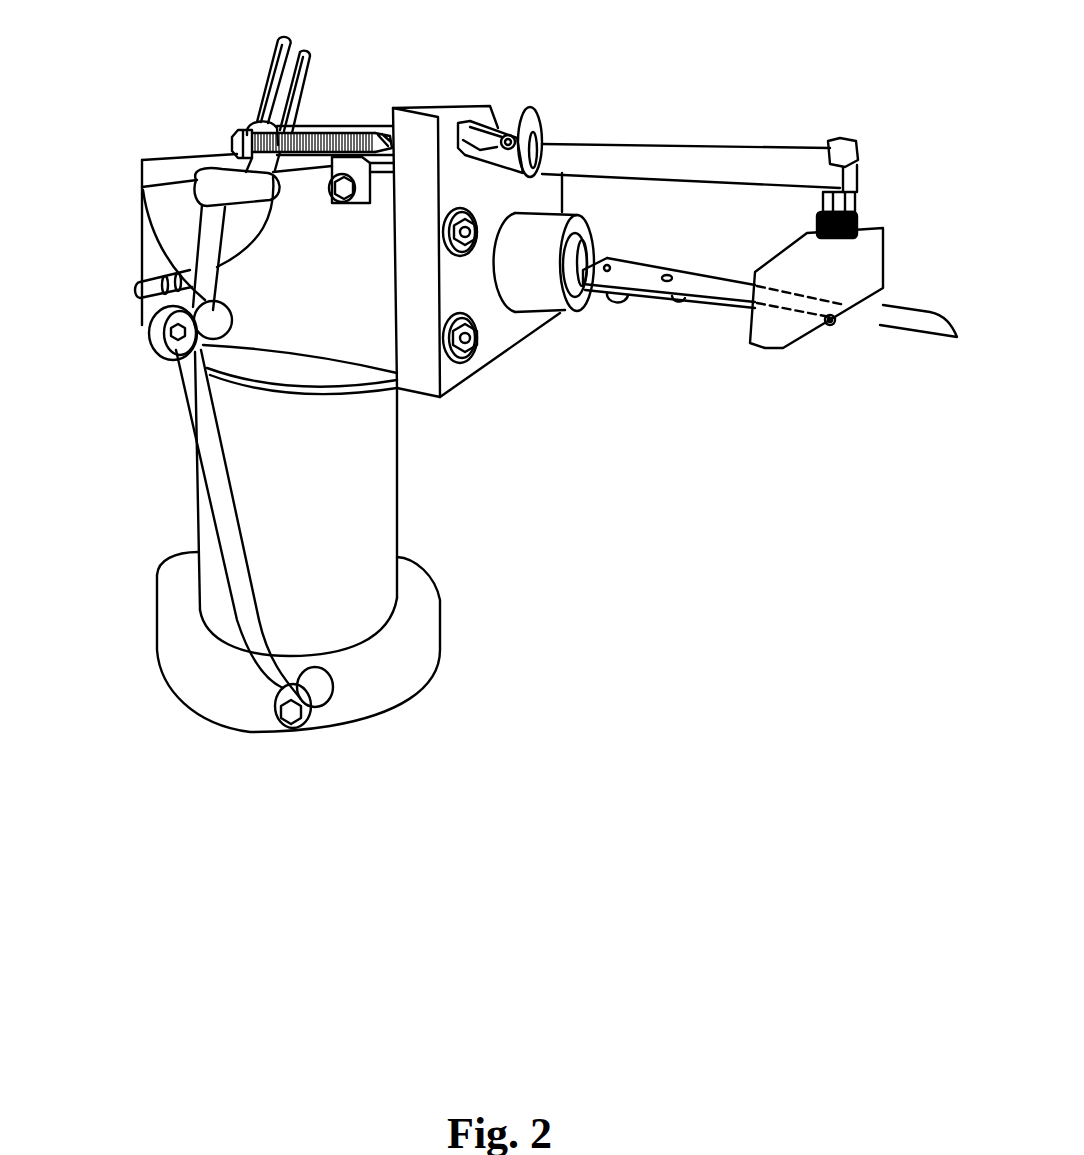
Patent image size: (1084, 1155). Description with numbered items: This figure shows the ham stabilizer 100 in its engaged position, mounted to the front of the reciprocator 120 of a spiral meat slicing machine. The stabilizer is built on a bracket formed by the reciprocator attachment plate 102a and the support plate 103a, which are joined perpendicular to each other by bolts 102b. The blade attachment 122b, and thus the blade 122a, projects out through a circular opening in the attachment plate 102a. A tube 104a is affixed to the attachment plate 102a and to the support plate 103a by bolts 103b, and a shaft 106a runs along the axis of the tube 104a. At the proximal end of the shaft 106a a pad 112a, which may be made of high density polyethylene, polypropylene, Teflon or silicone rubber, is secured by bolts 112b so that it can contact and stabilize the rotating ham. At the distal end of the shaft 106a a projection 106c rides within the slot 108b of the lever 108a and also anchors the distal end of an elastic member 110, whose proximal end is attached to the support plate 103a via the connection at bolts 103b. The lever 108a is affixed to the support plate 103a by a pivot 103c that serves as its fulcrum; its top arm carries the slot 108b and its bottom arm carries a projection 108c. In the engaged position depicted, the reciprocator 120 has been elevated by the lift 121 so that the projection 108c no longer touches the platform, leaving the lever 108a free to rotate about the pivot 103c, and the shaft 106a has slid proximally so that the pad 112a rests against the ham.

The ham stabilizer 100 is at (660, 86).
The reciprocator attachment plate 102a is at (510, 330).
The bolts 102b is at (473, 343).
The support plate 103a is at (358, 330).
The bolts 103b is at (347, 203).
The pivot 103c is at (175, 352).
The tube 104a is at (532, 118).
The shaft 106a is at (660, 160).
The projection 106c is at (232, 145).
The lever 108a is at (207, 232).
The slot 108b is at (285, 52).
The projection 108c is at (282, 713).
The elastic member 110 is at (327, 143).
The pad 112a is at (793, 323).
The bolts 112b is at (857, 143).
The reciprocator 120 is at (153, 232).
The lift 121 is at (197, 513).
The blade 122a is at (925, 320).
The blade attachment 122b is at (622, 292).